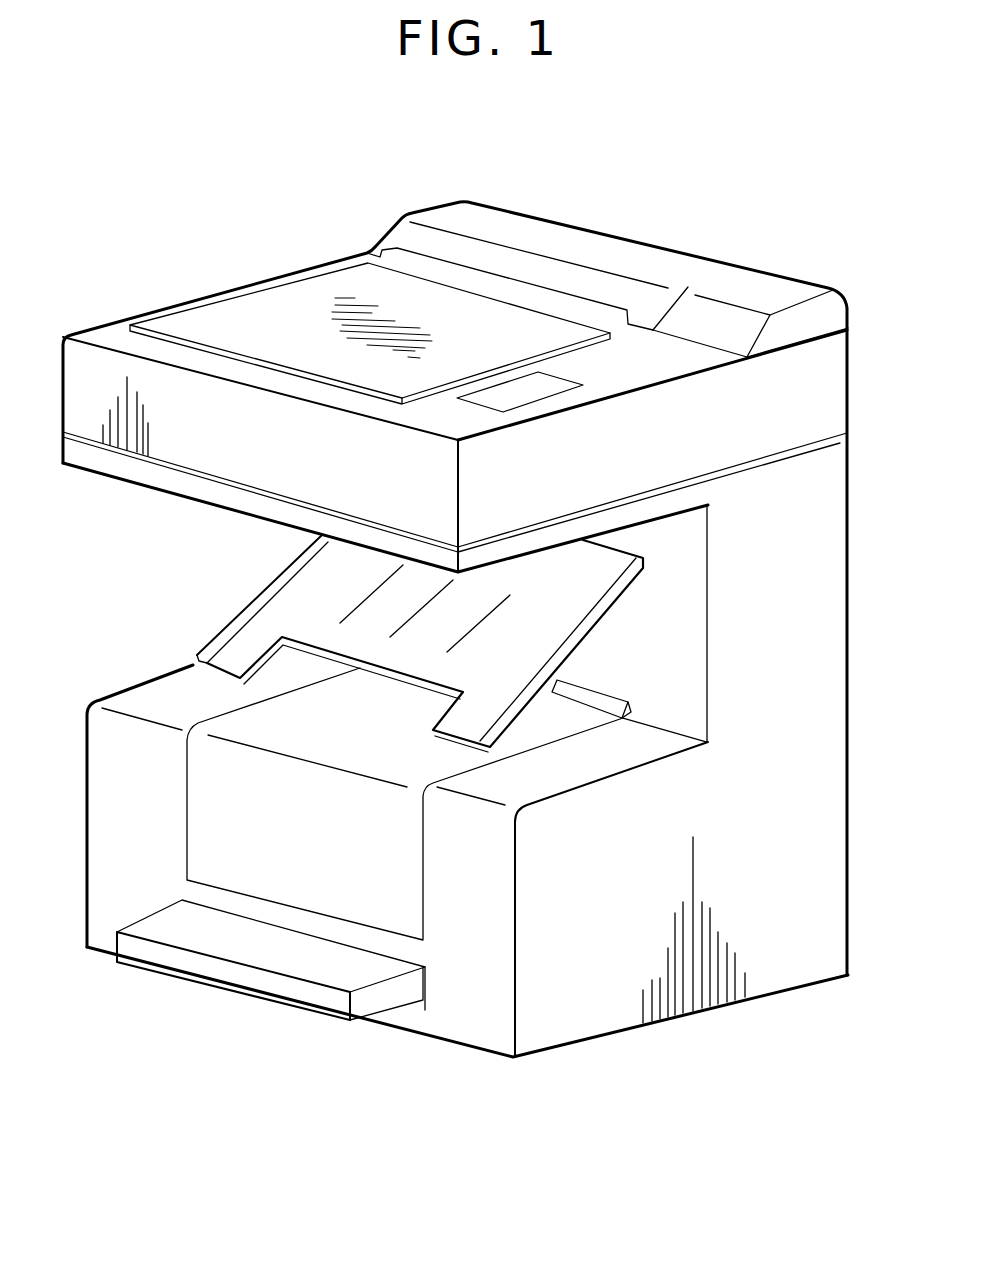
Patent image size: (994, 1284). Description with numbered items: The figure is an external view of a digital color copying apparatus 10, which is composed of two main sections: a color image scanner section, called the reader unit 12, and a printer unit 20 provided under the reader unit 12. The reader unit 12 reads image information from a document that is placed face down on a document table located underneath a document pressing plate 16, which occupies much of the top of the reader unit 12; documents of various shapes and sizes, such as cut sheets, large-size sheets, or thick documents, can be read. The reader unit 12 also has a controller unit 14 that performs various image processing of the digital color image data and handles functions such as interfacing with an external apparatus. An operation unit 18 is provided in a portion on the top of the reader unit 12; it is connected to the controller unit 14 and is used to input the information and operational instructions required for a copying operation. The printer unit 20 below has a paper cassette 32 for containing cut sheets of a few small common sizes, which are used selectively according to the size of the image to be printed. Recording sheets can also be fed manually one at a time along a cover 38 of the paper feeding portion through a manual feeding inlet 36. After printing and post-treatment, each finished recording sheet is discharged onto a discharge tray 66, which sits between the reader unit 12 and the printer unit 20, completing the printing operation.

The digital color copying apparatus 10 is at (638, 233).
The reader unit 12 is at (848, 360).
The controller unit 14 is at (757, 432).
The document pressing plate 16 is at (248, 310).
The operation unit 18 is at (563, 378).
The printer unit 20 is at (848, 660).
The paper cassette 32 is at (252, 985).
The manual feeding inlet 36 is at (608, 693).
The cover of paper feeding portion 38 is at (390, 887).
The discharge tray 66 is at (212, 637).